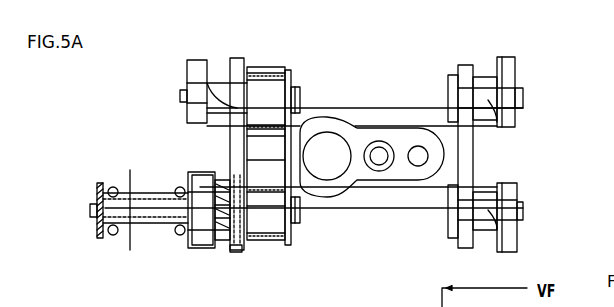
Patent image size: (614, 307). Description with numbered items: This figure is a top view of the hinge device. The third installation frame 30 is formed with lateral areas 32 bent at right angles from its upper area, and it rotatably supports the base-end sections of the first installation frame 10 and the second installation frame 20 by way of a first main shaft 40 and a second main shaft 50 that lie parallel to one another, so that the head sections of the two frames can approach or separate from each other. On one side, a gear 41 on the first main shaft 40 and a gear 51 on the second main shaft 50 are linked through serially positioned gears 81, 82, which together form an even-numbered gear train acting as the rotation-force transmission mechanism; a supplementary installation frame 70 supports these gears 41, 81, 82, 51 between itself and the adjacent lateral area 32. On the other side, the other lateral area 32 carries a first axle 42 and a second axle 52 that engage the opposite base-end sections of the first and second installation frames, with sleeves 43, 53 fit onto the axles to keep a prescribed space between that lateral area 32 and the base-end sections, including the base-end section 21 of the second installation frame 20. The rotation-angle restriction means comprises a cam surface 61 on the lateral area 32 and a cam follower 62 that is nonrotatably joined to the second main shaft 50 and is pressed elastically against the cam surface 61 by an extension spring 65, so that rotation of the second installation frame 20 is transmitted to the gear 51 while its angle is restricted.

The first installation frame 10 is at (511, 75).
The second installation frame 20 is at (514, 234).
The base-end section 21 is at (190, 242).
The third installation frame 30 is at (469, 143).
The lateral area 32 is at (465, 70).
The first main shaft 40 is at (176, 96).
The gear 41 is at (260, 92).
The first axle 42 is at (530, 95).
The sleeve 43 is at (482, 74).
The second main shaft 50 is at (96, 211).
The gear 51 is at (274, 250).
The second axle 52 is at (522, 204).
The sleeve 53 is at (485, 228).
The cam surface 61 is at (236, 246).
The cam follower 62 is at (224, 250).
The extension spring 65 is at (116, 242).
The supplementary installation frame 70 is at (355, 173).
The gear 81 is at (256, 137).
The gear 82 is at (251, 157).